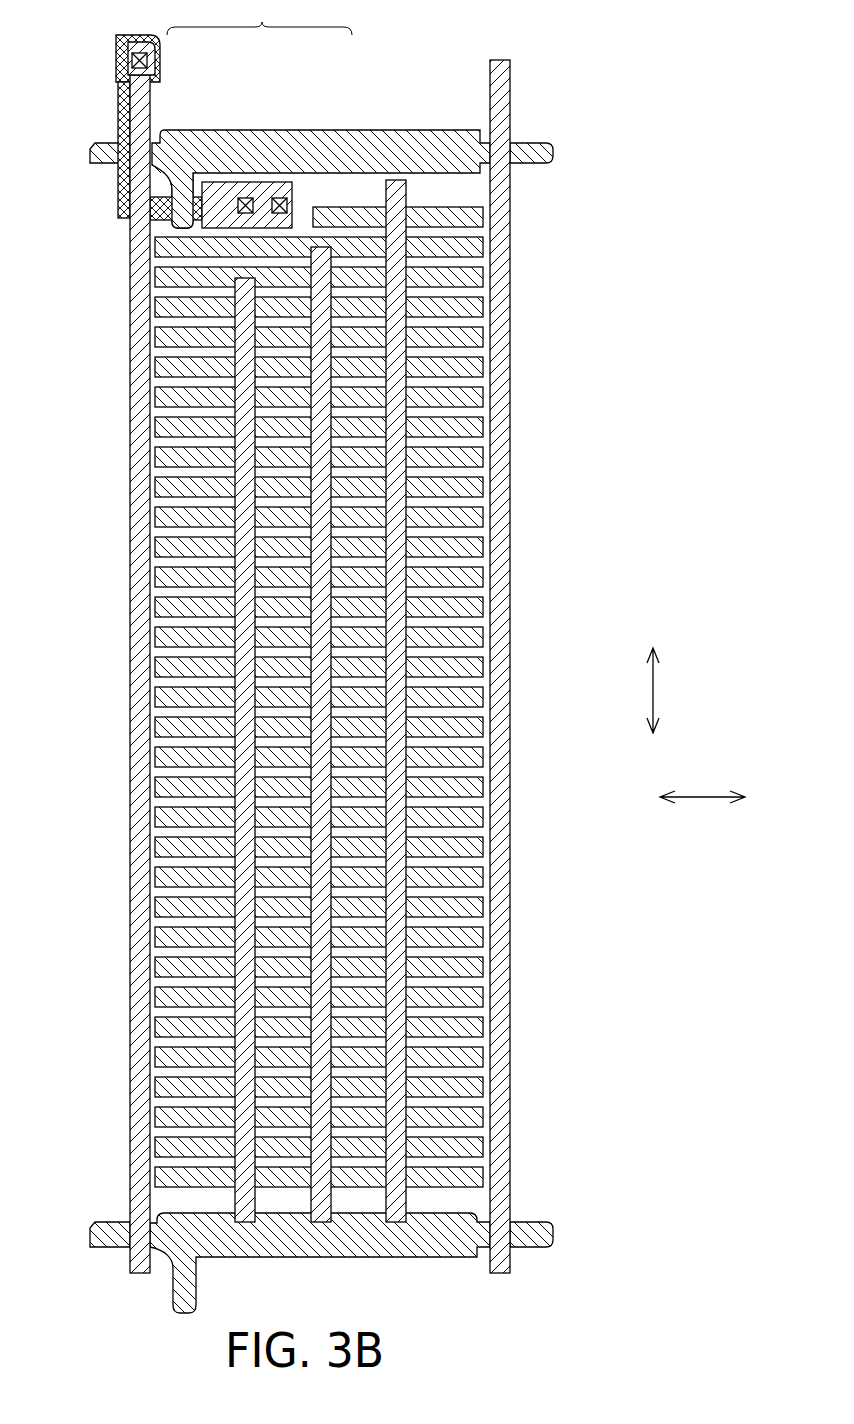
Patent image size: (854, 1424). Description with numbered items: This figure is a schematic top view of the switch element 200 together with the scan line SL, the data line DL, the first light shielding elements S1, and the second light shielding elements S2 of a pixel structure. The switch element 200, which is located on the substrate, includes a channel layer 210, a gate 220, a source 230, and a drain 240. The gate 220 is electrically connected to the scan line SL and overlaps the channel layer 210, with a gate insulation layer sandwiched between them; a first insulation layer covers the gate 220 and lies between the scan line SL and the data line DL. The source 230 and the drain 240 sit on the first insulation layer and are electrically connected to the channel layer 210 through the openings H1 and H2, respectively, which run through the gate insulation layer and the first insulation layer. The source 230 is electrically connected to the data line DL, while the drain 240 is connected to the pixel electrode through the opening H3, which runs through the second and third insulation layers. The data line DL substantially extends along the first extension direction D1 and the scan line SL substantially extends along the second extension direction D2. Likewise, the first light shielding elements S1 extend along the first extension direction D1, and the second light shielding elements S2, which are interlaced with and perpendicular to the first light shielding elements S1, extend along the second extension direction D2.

The switch element 200 is at (259, 17).
The channel layer 210 is at (163, 195).
The gate 220 is at (245, 186).
The source 230 is at (185, 62).
The drain 240 is at (193, 167).
The opening H1 is at (117, 58).
The opening H2 is at (245, 196).
The opening H3 is at (280, 196).
The scan line SL is at (535, 145).
The data line DL is at (135, 590).
The first light shielding elements S1 is at (405, 197).
The second light shielding elements S2 is at (470, 278).
The first extension direction D1 is at (669, 690).
The second extension direction D2 is at (702, 781).